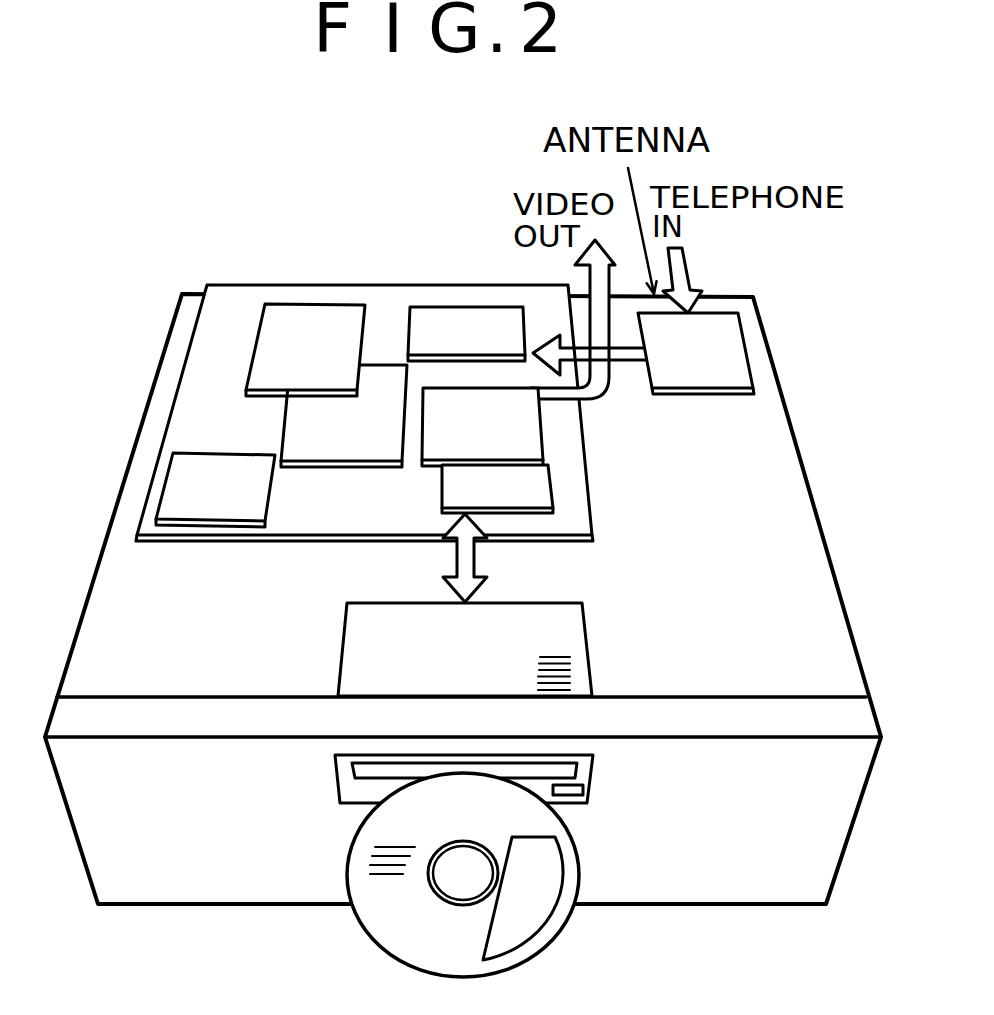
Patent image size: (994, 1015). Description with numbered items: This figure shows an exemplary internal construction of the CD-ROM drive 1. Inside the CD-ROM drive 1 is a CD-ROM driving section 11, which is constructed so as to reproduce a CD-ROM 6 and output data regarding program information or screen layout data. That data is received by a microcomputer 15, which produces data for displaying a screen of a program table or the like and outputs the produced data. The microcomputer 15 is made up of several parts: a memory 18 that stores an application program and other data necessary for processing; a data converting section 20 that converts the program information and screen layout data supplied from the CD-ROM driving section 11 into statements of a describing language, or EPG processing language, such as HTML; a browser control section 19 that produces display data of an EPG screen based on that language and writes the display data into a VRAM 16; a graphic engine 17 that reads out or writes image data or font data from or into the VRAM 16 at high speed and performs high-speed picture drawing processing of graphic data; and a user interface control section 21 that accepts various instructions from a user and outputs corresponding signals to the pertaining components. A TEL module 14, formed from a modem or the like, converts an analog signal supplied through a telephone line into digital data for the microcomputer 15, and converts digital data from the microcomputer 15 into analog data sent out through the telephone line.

The CD-ROM drive 1 is at (790, 418).
The CD-ROM 6 is at (548, 940).
The CD-ROM driving section 11 is at (588, 633).
The TEL module 14 is at (745, 337).
The microcomputer 15 is at (300, 303).
The VRAM 16 is at (552, 498).
The graphic engine 17 is at (430, 468).
The memory 18 is at (478, 307).
The browser control section 19 is at (330, 468).
The data converting section 20 is at (258, 400).
The user interface control section 21 is at (225, 526).